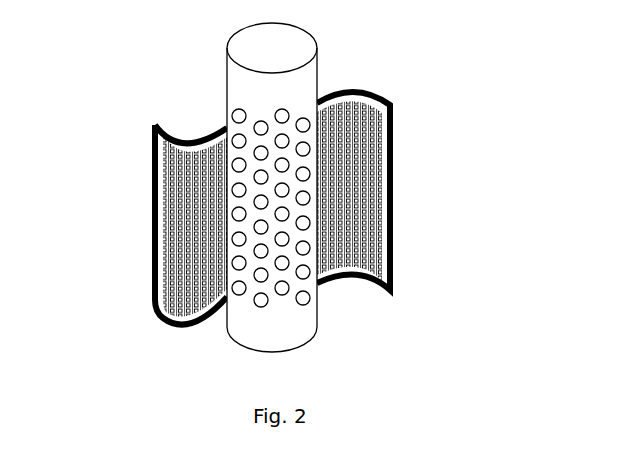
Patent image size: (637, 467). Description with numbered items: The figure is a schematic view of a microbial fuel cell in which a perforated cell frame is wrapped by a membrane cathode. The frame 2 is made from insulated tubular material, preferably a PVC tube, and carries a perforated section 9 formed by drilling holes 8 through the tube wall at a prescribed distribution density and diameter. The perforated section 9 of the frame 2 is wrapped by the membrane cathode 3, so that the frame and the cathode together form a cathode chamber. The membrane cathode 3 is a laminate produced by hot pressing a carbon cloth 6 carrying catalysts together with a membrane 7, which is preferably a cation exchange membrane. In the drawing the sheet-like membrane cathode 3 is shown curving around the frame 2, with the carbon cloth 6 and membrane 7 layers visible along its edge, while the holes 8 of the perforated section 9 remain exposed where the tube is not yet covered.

The frame 2 is at (276, 179).
The membrane cathode 3 is at (150, 203).
The carbon cloth 6 is at (370, 162).
The membrane 7 is at (407, 166).
The holes 8 is at (265, 277).
The perforated section 9 is at (291, 202).